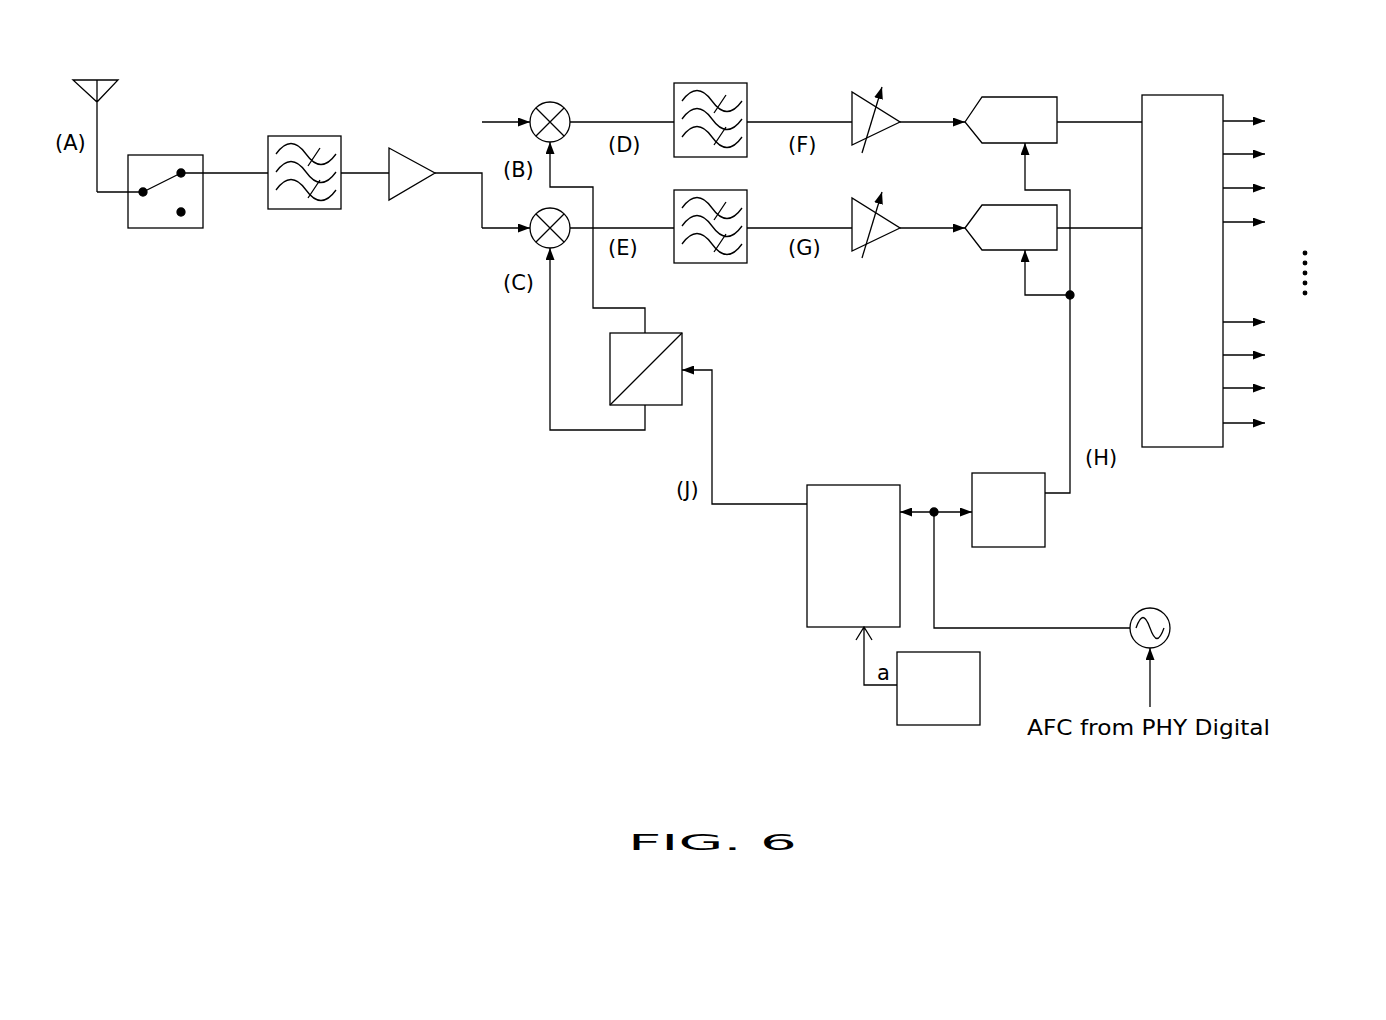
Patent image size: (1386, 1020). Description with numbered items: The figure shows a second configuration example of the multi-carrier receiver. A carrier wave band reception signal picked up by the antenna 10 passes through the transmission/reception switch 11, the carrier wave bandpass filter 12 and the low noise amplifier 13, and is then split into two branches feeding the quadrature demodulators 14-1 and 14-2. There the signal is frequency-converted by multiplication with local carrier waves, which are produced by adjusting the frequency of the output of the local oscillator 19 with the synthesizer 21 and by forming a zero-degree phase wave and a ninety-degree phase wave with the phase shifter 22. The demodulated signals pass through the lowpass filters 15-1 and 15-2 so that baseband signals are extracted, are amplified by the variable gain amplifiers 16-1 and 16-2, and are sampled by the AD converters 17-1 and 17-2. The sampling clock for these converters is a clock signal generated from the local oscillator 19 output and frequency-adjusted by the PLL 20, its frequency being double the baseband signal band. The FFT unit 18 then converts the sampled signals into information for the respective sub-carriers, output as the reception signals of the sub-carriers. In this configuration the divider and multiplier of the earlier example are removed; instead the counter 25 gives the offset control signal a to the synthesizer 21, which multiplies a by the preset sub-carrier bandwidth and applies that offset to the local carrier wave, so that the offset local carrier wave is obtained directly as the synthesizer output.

The antenna 10 is at (98, 125).
The transmission/reception switch 11 is at (172, 228).
The carrier wave bandpass filter 12 is at (335, 136).
The low noise amplifier 13 is at (415, 192).
The quadrature demodulator 14-1 is at (568, 110).
The quadrature demodulator 14-2 is at (535, 240).
The lowpass filter 15-1 is at (743, 83).
The lowpass filter 15-2 is at (747, 213).
The variable gain amplifier 16-1 is at (885, 130).
The variable gain amplifier 16-2 is at (885, 238).
The AD converter 17-1 is at (1020, 97).
The AD converter 17-2 is at (1005, 205).
The FFT unit 18 is at (1220, 95).
The local oscillator 19 is at (1170, 628).
The PLL 20 is at (1045, 525).
The synthesizer 21 is at (807, 603).
The phase shifter 22 is at (682, 353).
The counter 25 is at (980, 672).